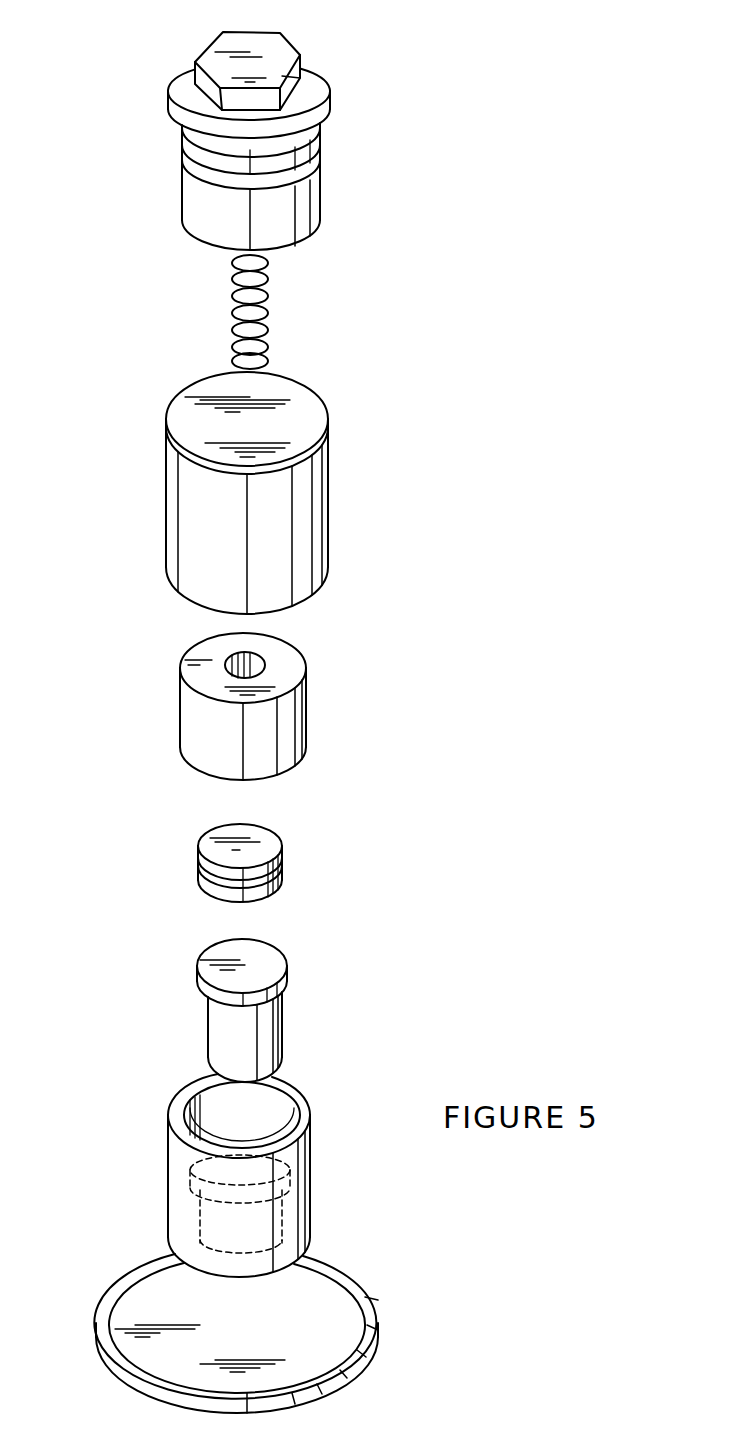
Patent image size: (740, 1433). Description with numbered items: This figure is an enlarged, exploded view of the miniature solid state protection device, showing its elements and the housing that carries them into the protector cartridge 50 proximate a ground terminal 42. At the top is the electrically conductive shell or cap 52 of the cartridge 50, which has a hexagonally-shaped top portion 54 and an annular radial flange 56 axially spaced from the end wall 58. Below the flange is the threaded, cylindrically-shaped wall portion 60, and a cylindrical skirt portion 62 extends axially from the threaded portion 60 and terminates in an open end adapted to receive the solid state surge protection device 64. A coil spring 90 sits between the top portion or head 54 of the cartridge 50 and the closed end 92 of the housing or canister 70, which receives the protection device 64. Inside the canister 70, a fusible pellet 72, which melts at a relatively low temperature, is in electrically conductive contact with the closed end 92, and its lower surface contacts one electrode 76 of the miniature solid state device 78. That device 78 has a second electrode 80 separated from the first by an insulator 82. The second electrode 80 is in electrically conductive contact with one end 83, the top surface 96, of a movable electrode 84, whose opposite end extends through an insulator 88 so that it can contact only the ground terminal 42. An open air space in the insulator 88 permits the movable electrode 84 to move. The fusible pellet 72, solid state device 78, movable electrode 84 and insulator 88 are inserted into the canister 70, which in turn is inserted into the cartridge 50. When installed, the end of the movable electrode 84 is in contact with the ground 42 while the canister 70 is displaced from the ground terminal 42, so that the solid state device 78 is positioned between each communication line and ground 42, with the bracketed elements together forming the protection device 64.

The ground terminal 42 is at (328, 1278).
The protector cartridge 50 is at (252, 127).
The electrically conductive shell or cap 52 is at (254, 186).
The top portion 54 is at (195, 62).
The annular radial flange 56 is at (168, 102).
The end wall 58 is at (305, 63).
The threaded, cylindrically-shaped wall portion 60 is at (318, 132).
The cylindrical skirt portion 62 is at (192, 212).
The solid state surge protection device 64 is at (108, 1268).
The housing or canister 70 is at (270, 480).
The fusible pellet 72 is at (288, 710).
The electrode 76 is at (270, 843).
The miniature solid state device 78 is at (240, 866).
The second electrode 80 is at (273, 892).
The insulator 82 is at (277, 872).
The end of movable electrode 83 is at (202, 987).
The movable electrode 84 is at (237, 1008).
The insulator 88 is at (177, 1187).
The coil spring 90 is at (268, 295).
The closed end 92 is at (282, 385).
The top surface 96 is at (272, 967).